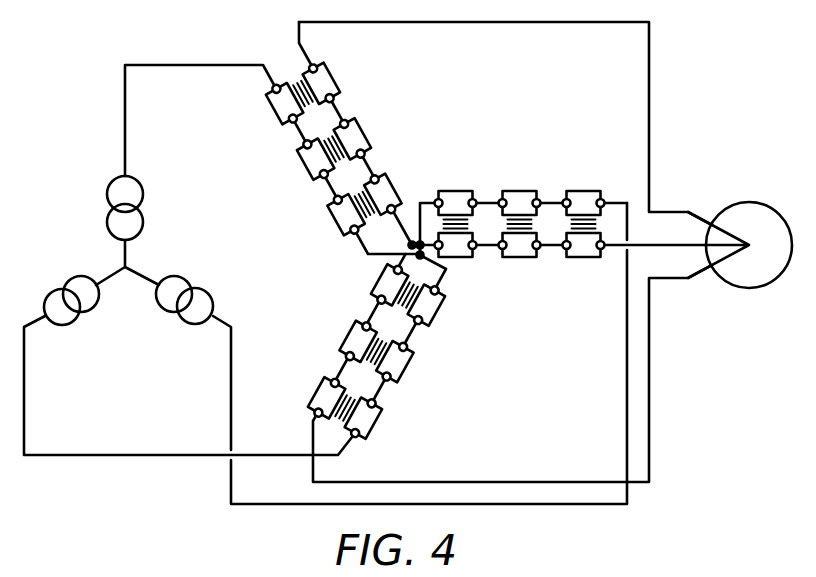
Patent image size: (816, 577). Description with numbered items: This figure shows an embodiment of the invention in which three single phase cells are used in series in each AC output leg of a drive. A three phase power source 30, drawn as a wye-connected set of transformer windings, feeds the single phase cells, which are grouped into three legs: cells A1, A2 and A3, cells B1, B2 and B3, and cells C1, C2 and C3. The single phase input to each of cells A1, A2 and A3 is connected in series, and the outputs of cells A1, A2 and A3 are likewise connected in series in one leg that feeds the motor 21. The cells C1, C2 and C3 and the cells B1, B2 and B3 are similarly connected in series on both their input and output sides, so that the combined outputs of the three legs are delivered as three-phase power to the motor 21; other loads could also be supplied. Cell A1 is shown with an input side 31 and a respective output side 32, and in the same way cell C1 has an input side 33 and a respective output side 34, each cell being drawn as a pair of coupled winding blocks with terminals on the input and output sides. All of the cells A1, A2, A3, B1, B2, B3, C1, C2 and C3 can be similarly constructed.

The motor 21 is at (745, 200).
The three phase power source 30 is at (100, 243).
The input side 31 is at (445, 198).
The output side 32 is at (460, 250).
The input side 33 is at (337, 233).
The output side 34 is at (388, 190).
The single phase cell A1 is at (470, 206).
The single phase cell A2 is at (520, 209).
The single phase cell A3 is at (584, 209).
The single phase cell B1 is at (419, 297).
The single phase cell B2 is at (387, 354).
The single phase cell B3 is at (356, 409).
The single phase cell C1 is at (362, 209).
The single phase cell C2 is at (323, 150).
The single phase cell C3 is at (292, 93).